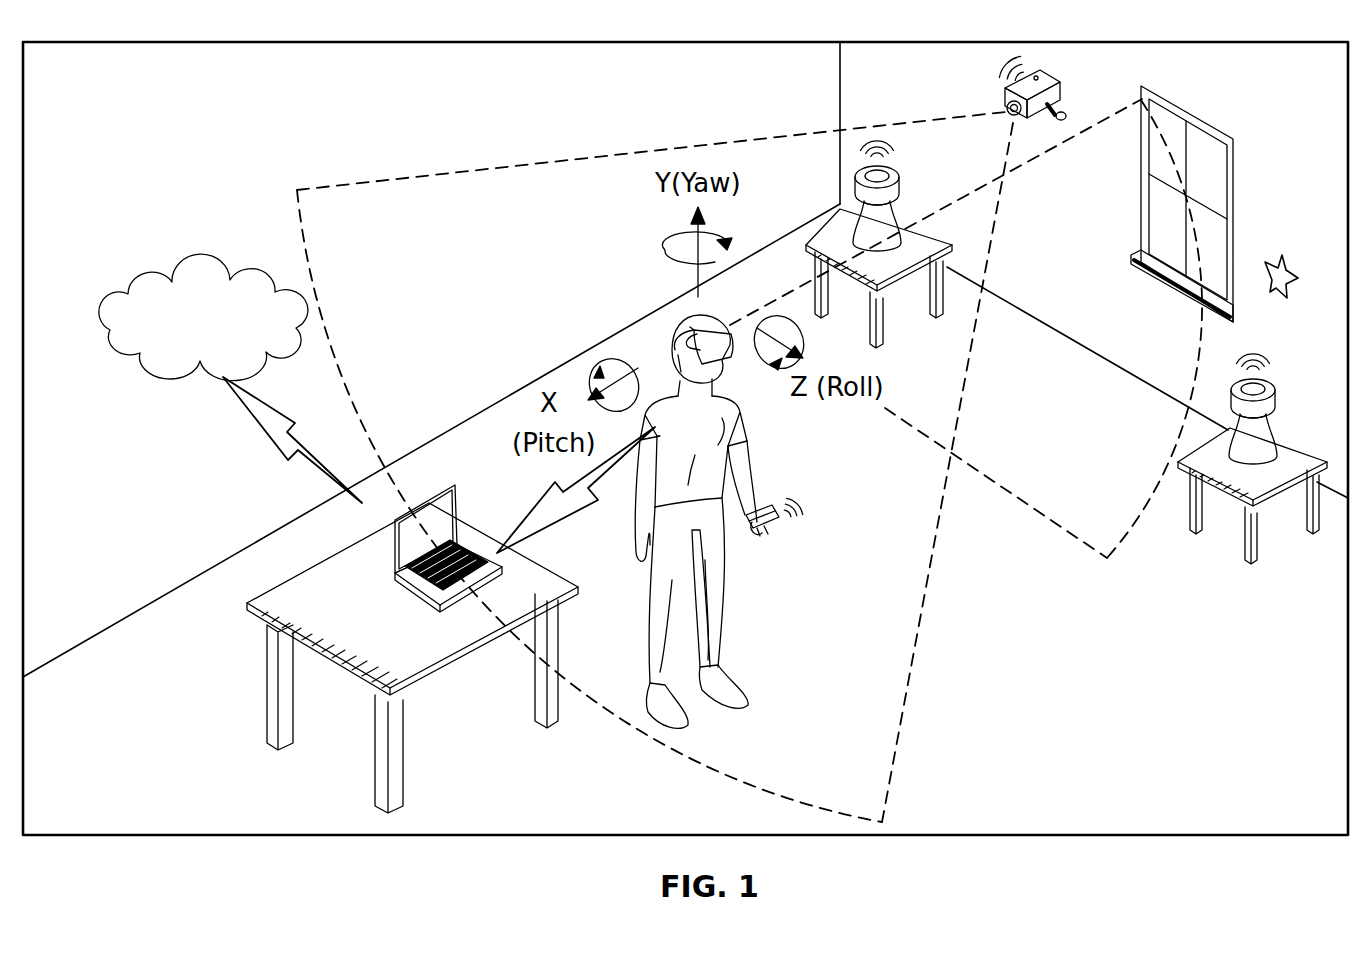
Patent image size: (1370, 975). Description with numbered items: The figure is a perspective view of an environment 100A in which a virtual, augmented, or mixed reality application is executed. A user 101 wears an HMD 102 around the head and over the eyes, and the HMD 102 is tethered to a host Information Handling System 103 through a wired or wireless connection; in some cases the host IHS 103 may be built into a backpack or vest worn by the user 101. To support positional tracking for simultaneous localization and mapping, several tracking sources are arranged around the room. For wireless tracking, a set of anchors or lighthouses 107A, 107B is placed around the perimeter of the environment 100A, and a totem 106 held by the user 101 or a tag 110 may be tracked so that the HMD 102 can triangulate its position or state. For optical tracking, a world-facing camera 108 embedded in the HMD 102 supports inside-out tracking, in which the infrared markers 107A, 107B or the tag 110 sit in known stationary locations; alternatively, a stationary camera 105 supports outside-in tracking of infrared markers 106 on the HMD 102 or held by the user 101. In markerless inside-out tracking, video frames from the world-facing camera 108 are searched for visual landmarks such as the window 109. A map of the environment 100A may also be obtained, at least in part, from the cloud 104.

The environment 100A is at (112, 40).
The user 101 is at (723, 592).
The HMD 102 is at (727, 356).
The host Information Handling System (IHS) 103 is at (375, 537).
The cloud 104 is at (122, 296).
The camera 105 is at (1062, 90).
The totem 106 is at (778, 533).
The anchor or lighthouse 107A is at (903, 185).
The anchor or lighthouse 107B is at (1275, 400).
The world-facing (WF) camera 108 is at (717, 322).
The window 109 is at (1236, 165).
The tag 110 is at (1290, 268).